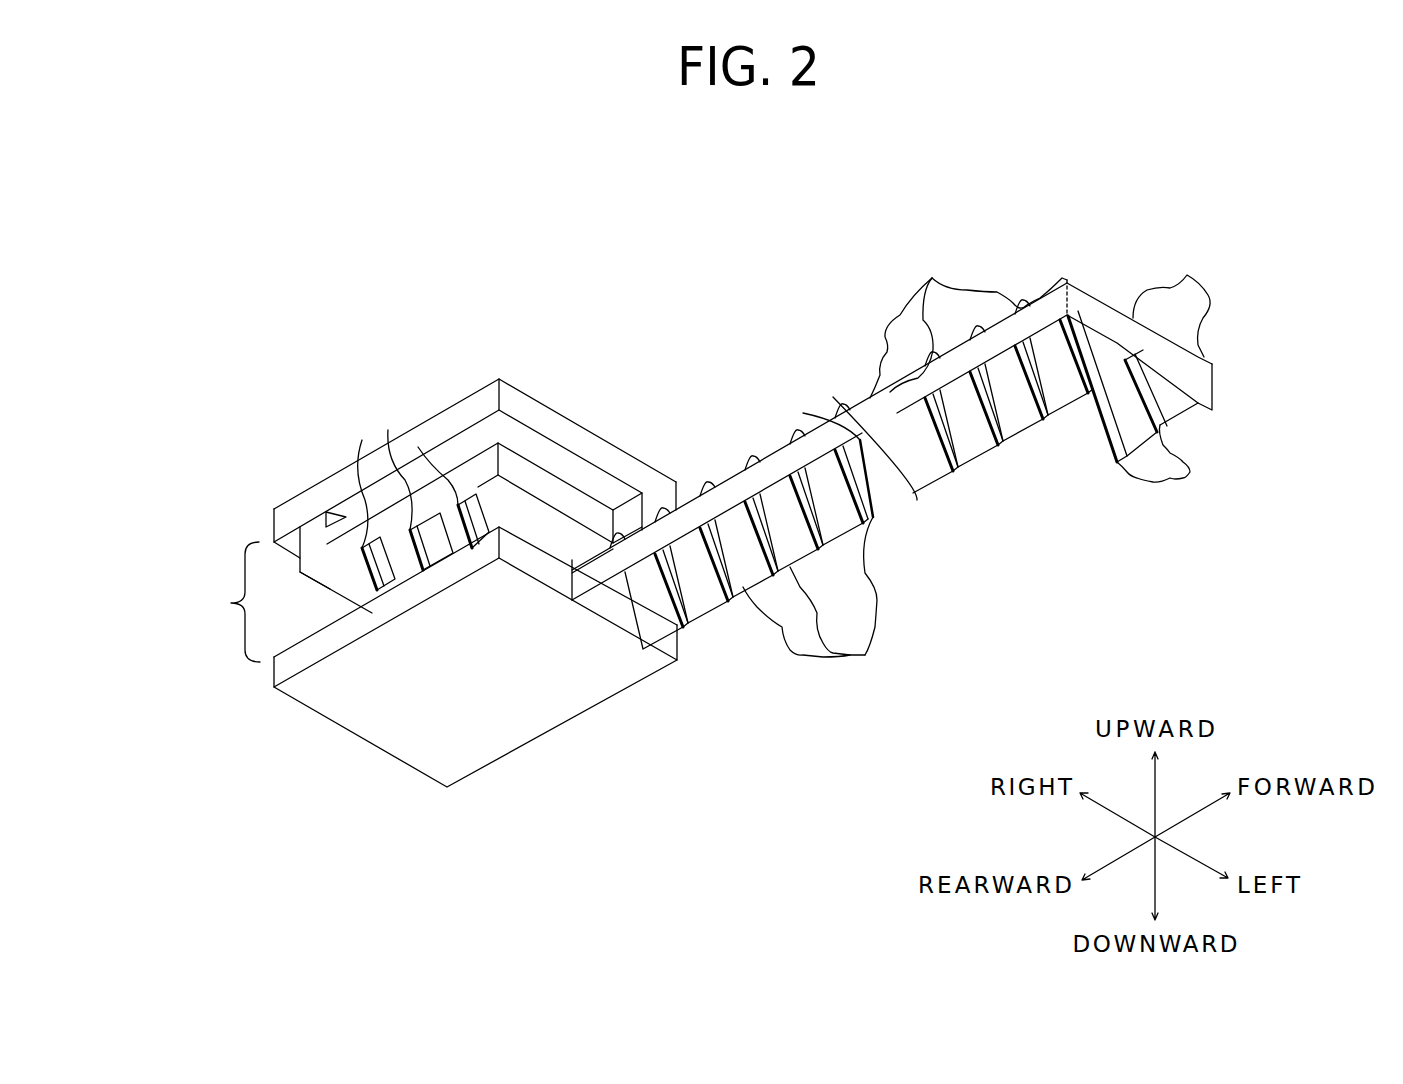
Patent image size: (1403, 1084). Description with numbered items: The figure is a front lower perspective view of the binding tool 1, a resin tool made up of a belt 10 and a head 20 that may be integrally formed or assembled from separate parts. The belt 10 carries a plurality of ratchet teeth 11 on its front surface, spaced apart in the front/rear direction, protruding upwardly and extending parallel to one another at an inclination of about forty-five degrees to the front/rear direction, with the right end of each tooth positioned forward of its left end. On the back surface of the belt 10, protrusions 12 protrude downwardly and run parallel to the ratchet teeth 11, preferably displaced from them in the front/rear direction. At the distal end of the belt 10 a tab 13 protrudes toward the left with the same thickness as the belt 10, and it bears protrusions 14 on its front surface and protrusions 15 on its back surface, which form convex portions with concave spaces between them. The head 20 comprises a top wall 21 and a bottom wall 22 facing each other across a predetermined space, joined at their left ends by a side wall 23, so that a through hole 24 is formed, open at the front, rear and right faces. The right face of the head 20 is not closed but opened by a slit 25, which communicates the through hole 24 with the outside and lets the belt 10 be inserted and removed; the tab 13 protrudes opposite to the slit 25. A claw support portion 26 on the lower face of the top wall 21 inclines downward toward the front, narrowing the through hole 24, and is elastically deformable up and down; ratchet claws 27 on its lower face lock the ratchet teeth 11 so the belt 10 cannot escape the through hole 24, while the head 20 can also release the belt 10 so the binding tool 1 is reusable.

The binding tool 1 is at (722, 224).
The belt 10 is at (835, 362).
The ratchet teeth 11 is at (968, 325).
The protrusions 12 is at (865, 655).
The tab 13 is at (1203, 385).
The protrusions 14 is at (1139, 355).
The protrusions 15 is at (1185, 480).
The head 20 is at (519, 329).
The top wall 21 is at (440, 412).
The bottom wall 22 is at (498, 740).
The side wall 23 is at (668, 643).
The through hole 24 is at (307, 626).
The slit 25 is at (228, 602).
The claw support portion 26 is at (557, 492).
The ratchet claws 27 is at (418, 447).